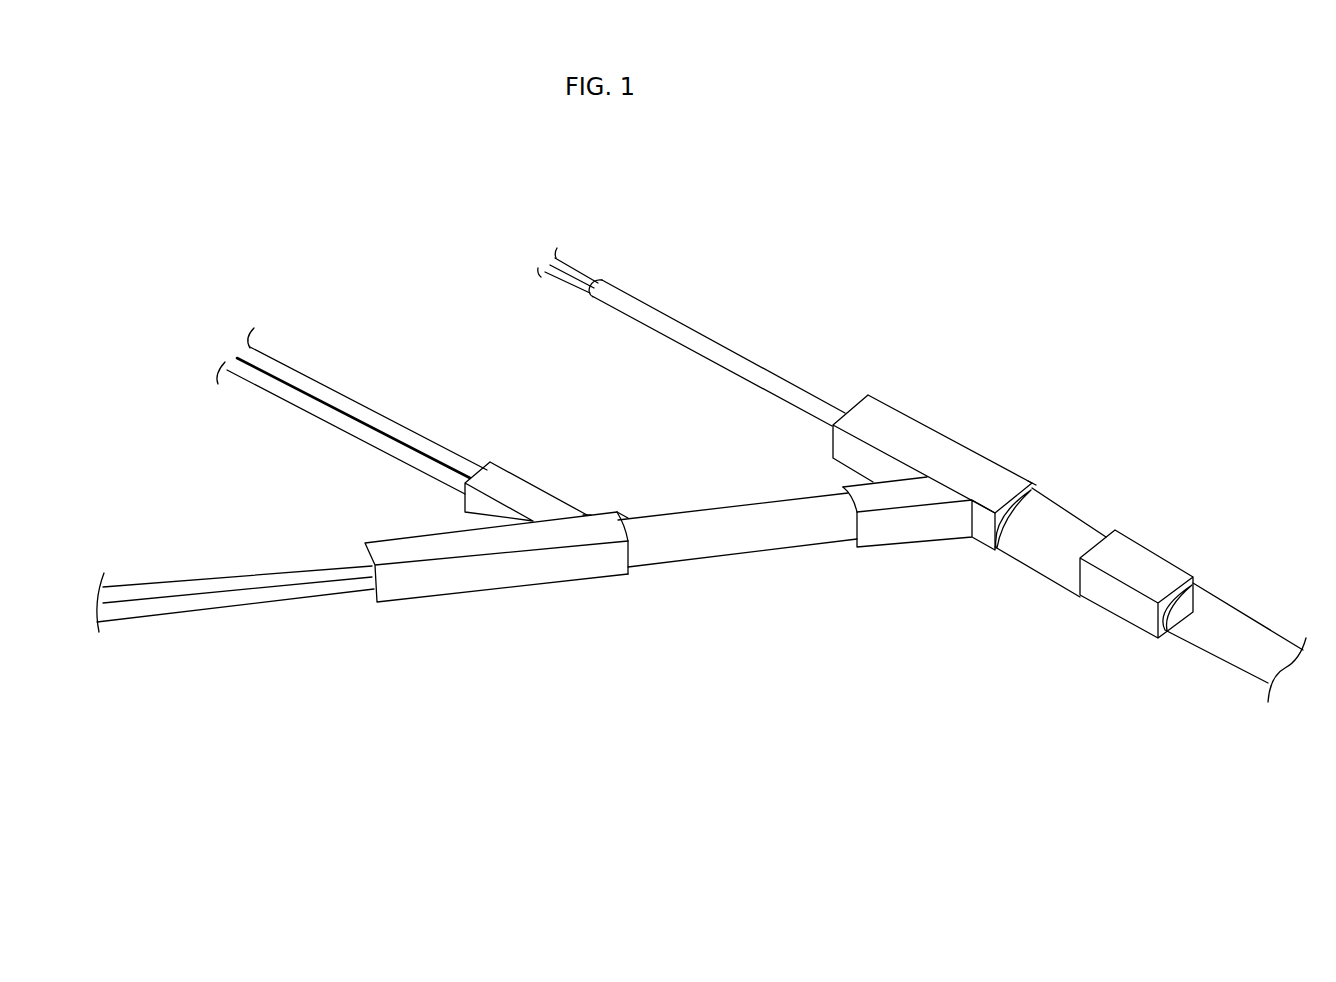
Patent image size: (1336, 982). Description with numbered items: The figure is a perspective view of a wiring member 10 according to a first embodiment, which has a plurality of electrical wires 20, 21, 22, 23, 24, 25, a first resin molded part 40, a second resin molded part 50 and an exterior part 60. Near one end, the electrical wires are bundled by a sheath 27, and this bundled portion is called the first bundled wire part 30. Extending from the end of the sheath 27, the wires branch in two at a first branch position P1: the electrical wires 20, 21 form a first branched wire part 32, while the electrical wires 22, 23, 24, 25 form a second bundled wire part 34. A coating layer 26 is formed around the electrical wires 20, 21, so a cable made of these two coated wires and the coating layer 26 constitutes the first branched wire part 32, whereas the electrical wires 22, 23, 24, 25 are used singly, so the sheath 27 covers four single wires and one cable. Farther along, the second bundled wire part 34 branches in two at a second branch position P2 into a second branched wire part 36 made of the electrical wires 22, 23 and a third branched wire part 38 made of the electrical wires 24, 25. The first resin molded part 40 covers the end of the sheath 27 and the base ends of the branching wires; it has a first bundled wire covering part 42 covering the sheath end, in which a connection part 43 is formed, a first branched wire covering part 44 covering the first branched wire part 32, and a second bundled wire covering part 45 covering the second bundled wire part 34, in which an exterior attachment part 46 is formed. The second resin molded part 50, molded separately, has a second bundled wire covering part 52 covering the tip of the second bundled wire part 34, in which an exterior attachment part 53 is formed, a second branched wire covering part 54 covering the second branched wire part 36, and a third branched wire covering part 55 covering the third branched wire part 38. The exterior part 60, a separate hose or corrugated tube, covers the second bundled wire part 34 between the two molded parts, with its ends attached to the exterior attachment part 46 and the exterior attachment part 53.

The wiring member 10 is at (1027, 244).
The electrical wire 20 is at (571, 266).
The electrical wire 21 is at (565, 281).
The electrical wire 22 is at (283, 369).
The electrical wire 23 is at (272, 386).
The electrical wire 24 is at (155, 588).
The electrical wire 25 is at (148, 606).
The coating layer 26 is at (665, 318).
The sheath 27 is at (1250, 622).
The first bundled wire part 30 is at (1234, 647).
The first branched wire part 32 is at (690, 323).
The second bundled wire part 34 is at (737, 548).
The second branched wire part 36 is at (352, 406).
The third branched wire part 38 is at (235, 605).
The first resin molded part 40 is at (941, 493).
The first bundled wire covering part 42 is at (1118, 612).
The connection part 43 is at (1080, 515).
The first branched wire covering part 44 is at (905, 420).
The second bundled wire covering part 45 is at (930, 525).
The exterior attachment part 46 is at (862, 535).
The second resin molded part 50 is at (502, 549).
The second bundled wire covering part 52 is at (607, 580).
The exterior attachment part 53 is at (617, 510).
The second branched wire covering part 54 is at (497, 480).
The third branched wire covering part 55 is at (472, 572).
The exterior part 60 is at (752, 518).
The first branch position P1 is at (988, 449).
The second branch position P2 is at (585, 503).